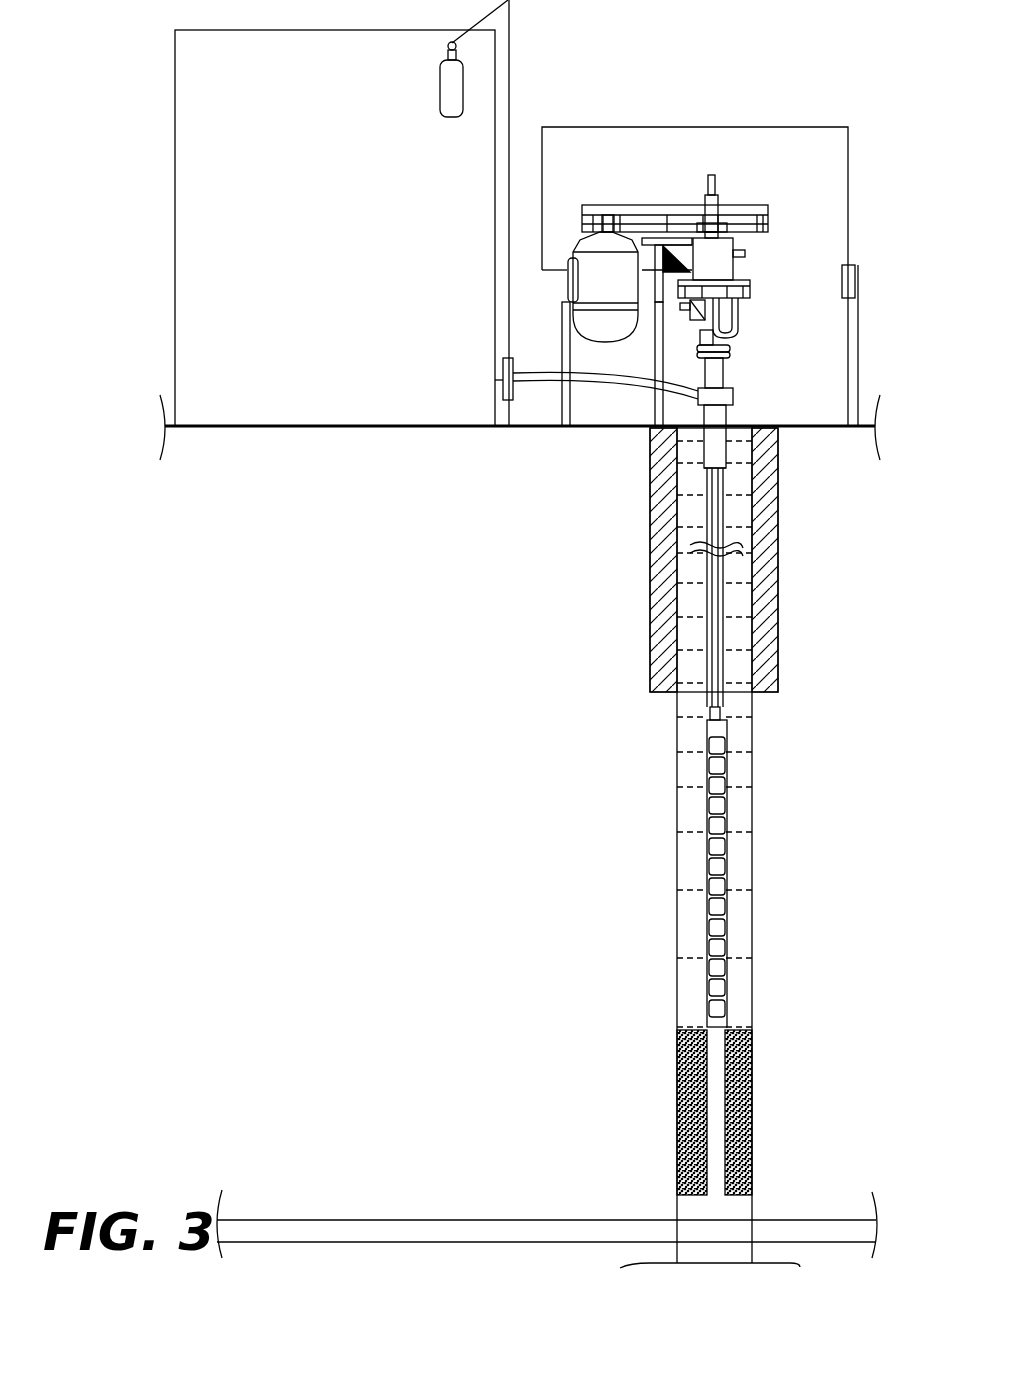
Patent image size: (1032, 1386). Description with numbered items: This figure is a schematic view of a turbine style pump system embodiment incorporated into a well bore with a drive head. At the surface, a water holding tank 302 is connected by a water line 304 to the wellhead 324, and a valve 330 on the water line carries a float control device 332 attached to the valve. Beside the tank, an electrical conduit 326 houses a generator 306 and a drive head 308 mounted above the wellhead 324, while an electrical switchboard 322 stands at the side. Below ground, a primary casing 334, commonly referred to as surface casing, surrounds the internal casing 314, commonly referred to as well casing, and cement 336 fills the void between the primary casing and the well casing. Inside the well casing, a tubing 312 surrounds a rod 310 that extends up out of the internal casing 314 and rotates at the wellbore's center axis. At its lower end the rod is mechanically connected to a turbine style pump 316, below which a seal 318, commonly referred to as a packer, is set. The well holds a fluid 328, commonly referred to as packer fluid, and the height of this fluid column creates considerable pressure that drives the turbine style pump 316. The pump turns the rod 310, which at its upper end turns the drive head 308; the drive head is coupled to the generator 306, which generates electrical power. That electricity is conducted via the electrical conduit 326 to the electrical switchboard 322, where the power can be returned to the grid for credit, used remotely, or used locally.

The water holding tank 302 is at (315, 234).
The water line 304 is at (543, 373).
The generator 306 is at (605, 215).
The drive head 308 is at (722, 258).
The rod 310 is at (722, 497).
The tubing 312 is at (728, 592).
The internal casing 314 is at (759, 742).
The turbine style pump 316 is at (717, 958).
The seal 318 is at (740, 1125).
The electrical switchboard 322 is at (842, 275).
The wellhead 324 is at (733, 397).
The electrical conduit 326 is at (690, 127).
The fluid 328 is at (693, 922).
The valve 330 is at (513, 406).
The float control device 332 is at (514, 57).
The primary casing 334 is at (648, 582).
The cement 336 is at (658, 495).